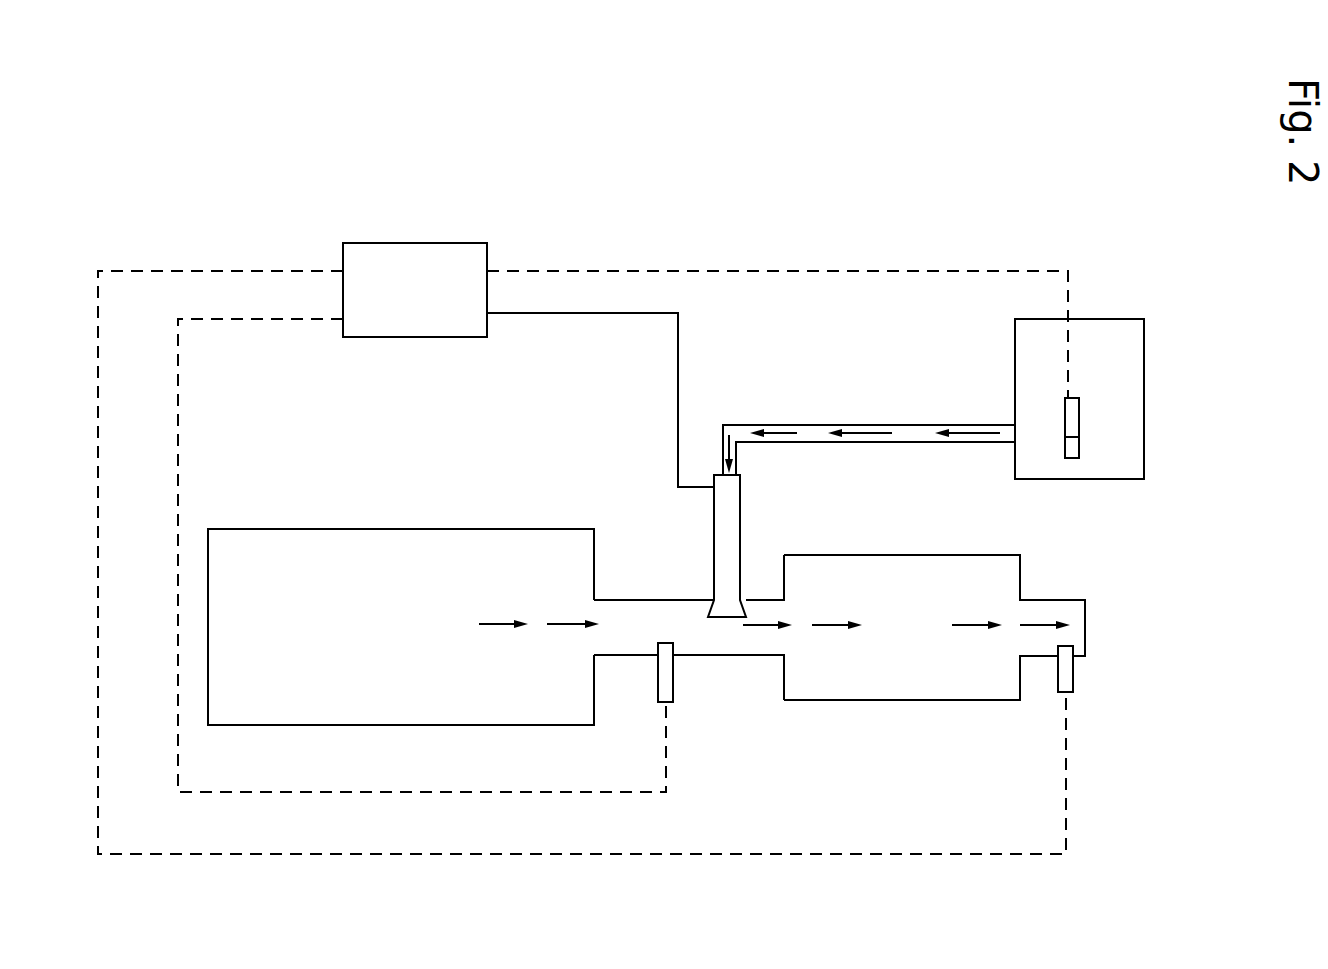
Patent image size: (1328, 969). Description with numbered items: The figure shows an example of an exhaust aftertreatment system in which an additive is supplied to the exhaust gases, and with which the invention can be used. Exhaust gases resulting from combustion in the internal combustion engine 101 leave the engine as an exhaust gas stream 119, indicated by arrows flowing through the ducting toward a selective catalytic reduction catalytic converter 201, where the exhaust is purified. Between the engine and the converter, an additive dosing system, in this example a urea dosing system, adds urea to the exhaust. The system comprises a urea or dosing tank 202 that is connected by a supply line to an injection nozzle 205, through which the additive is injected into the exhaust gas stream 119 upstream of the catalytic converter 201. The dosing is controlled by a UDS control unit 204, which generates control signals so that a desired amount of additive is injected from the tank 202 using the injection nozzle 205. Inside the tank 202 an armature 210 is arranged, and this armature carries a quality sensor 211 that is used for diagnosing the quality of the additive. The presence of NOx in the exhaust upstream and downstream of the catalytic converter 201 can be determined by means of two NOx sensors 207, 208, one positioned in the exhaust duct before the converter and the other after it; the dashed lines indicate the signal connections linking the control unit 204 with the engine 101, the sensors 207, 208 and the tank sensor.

The internal combustion engine 101 is at (427, 667).
The exhaust gas stream 119 is at (502, 626).
The SCR catalytic converter 201 is at (955, 673).
The urea tank 202 is at (1105, 342).
The UDS control unit 204 is at (425, 320).
The injection nozzle 205 is at (723, 573).
The NOx sensor 207 is at (668, 677).
The NOx sensor 208 is at (1067, 677).
The armature 210 is at (1070, 410).
The quality sensor 211 is at (1068, 455).